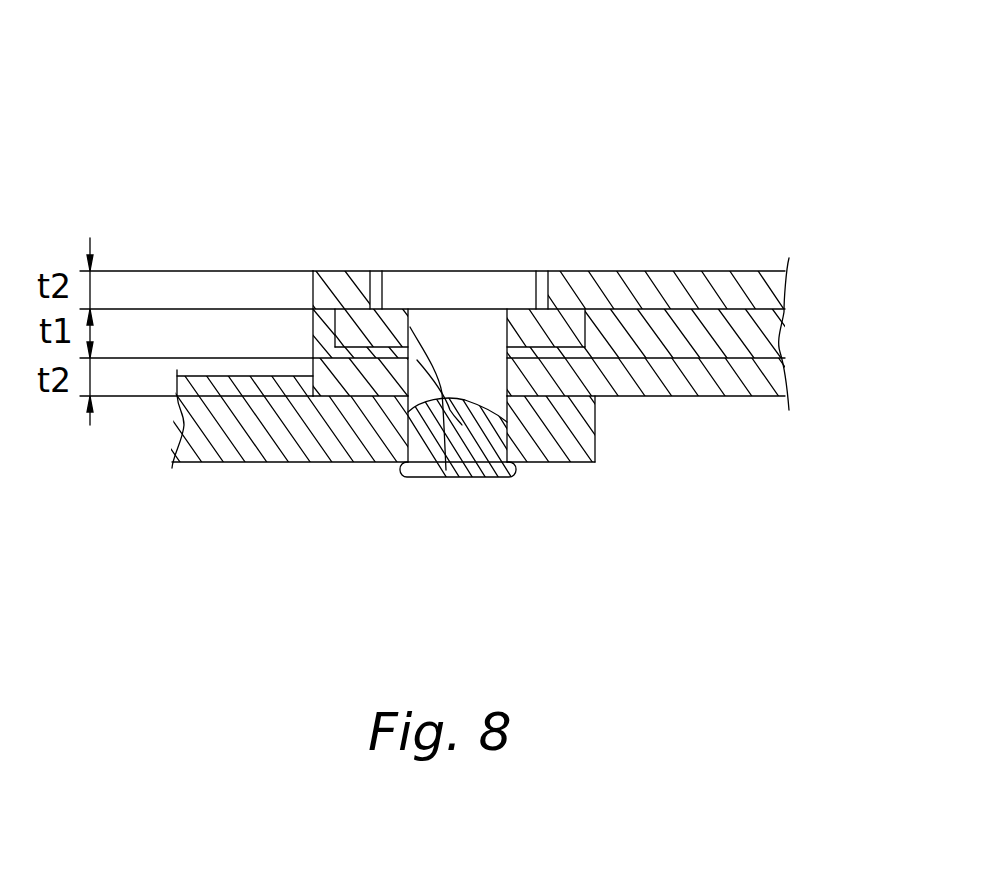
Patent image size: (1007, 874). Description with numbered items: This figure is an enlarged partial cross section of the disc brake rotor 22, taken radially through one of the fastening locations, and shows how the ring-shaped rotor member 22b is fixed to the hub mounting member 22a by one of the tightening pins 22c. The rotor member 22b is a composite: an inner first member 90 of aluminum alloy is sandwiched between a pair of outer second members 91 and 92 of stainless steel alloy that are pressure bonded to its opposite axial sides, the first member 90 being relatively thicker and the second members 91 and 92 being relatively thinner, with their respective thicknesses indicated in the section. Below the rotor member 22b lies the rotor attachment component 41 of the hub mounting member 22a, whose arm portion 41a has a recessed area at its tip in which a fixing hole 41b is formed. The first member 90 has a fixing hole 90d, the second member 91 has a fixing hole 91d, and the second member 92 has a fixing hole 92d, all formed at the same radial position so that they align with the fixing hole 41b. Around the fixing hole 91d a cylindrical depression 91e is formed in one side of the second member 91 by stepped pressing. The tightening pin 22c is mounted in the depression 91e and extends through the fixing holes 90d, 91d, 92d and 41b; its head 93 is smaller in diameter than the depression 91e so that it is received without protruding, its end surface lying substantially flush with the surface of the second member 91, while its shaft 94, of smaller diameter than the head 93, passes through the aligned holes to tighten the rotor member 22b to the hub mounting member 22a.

The disc brake rotor 22 is at (742, 267).
The hub mounting member 22a is at (298, 438).
The rotor member 22b is at (788, 43).
The tightening pin 22c is at (338, 73).
The rotor attachment component 41 is at (242, 469).
The arm portion 41a is at (303, 482).
The fixing hole 41b is at (410, 477).
The first member 90 is at (650, 322).
The fixing hole 90d is at (478, 478).
The second member 91 is at (595, 293).
The fixing hole 91d is at (513, 472).
The cylindrical depression 91e is at (543, 288).
The second member 92 is at (678, 365).
The fixing hole 92d is at (441, 480).
The head 93 is at (443, 282).
The shaft 94 is at (477, 343).